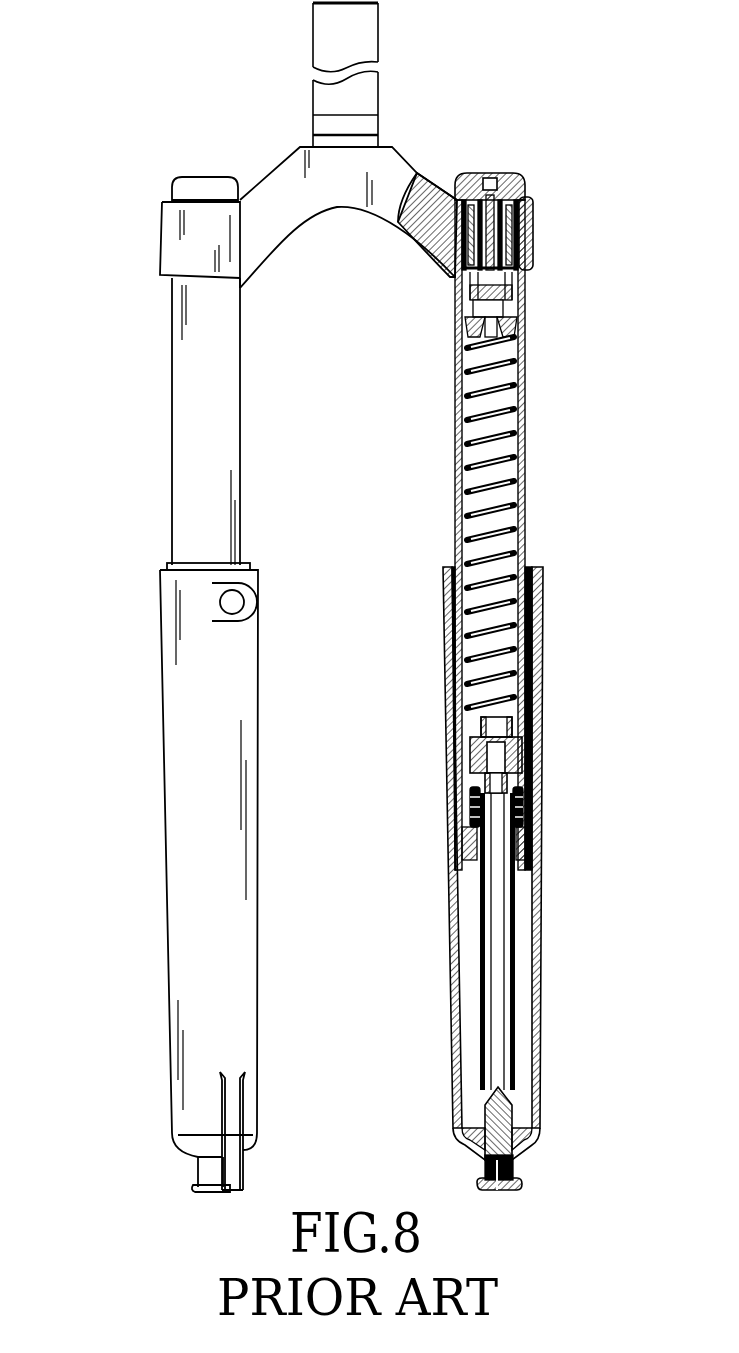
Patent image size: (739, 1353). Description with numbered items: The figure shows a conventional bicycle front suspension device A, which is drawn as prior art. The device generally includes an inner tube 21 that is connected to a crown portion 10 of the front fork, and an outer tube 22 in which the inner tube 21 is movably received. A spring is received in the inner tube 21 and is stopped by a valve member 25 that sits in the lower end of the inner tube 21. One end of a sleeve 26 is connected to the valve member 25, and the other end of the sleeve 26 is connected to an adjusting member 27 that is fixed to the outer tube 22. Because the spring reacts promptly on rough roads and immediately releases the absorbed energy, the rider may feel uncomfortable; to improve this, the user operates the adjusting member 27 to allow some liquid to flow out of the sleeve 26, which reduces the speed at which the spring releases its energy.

The crown portion 10 is at (392, 178).
The conventional bicycle front suspension device A is at (150, 321).
The inner tube 21 is at (525, 427).
The outer tube 22 is at (541, 955).
The valve member 25 is at (462, 752).
The sleeve 26 is at (480, 927).
The adjusting member 27 is at (485, 1162).